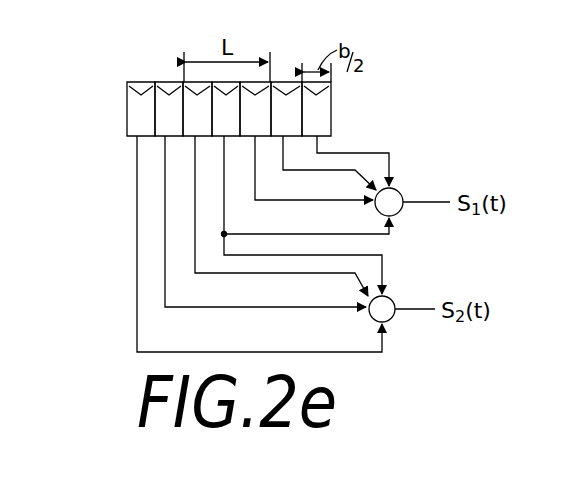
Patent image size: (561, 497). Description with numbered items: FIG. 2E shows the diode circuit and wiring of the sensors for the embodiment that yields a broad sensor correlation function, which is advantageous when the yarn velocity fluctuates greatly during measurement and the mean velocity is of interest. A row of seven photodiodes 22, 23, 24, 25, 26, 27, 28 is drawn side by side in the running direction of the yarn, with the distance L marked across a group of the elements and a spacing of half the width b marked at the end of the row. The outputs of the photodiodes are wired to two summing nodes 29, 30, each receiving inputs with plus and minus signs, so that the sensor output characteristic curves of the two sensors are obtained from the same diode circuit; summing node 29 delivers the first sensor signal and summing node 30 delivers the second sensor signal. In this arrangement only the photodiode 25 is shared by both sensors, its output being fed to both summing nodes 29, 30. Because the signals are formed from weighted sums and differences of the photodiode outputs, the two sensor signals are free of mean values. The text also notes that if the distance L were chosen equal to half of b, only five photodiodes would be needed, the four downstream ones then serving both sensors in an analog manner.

The photodiode 22 is at (137, 111).
The photodiode 23 is at (168, 108).
The photodiode 24 is at (202, 120).
The photodiode 25 is at (228, 123).
The photodiode 26 is at (290, 110).
The photodiode 27 is at (288, 120).
The photodiode 28 is at (322, 112).
The summing node for S1(t) 29 is at (400, 190).
The summing node for S2(t) 30 is at (392, 298).